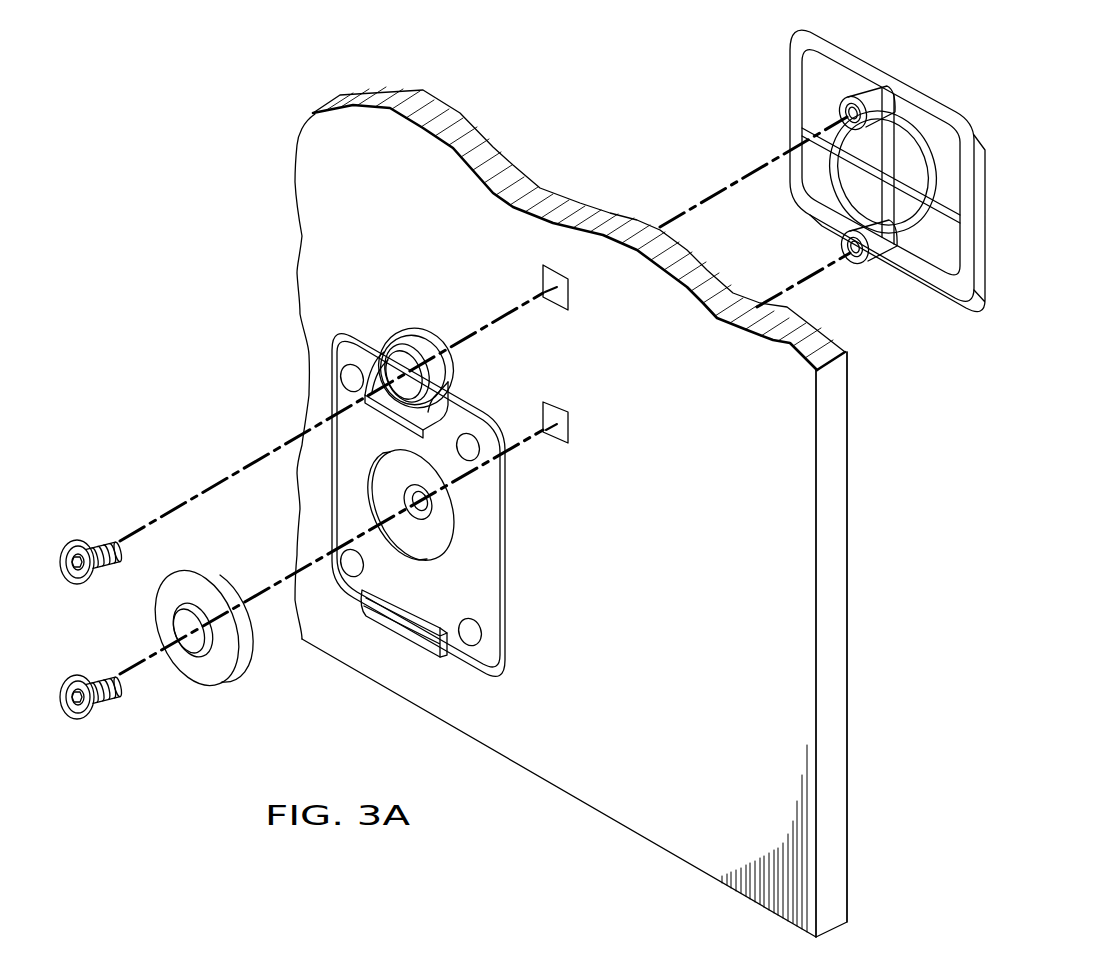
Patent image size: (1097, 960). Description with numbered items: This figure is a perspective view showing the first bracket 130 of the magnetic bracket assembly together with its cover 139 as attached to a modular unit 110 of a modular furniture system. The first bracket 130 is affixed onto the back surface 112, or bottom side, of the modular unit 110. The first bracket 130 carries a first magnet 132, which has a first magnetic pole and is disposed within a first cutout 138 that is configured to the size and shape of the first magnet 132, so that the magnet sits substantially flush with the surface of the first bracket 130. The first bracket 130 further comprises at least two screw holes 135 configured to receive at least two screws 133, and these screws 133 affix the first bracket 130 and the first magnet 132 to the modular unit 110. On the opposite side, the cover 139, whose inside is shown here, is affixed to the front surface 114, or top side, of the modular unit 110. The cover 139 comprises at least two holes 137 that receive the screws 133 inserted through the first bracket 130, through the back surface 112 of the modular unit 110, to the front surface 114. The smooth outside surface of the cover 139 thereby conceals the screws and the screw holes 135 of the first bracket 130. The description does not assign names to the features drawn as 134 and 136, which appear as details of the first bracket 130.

The modular unit 110 is at (838, 573).
The back surface 112 is at (790, 663).
The front surface 114 is at (847, 473).
The first bracket 130 is at (522, 572).
The first magnet 132 is at (215, 686).
The screws 133 is at (91, 538).
The bracket 134 is at (364, 406).
The screw holes 135 is at (393, 350).
The tab 136 is at (392, 625).
The holes 137 is at (847, 93).
The first cutout 138 is at (385, 503).
The cover 139 is at (912, 90).